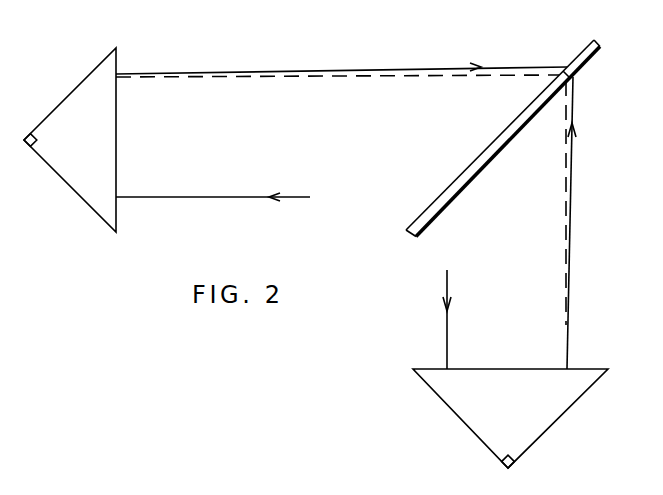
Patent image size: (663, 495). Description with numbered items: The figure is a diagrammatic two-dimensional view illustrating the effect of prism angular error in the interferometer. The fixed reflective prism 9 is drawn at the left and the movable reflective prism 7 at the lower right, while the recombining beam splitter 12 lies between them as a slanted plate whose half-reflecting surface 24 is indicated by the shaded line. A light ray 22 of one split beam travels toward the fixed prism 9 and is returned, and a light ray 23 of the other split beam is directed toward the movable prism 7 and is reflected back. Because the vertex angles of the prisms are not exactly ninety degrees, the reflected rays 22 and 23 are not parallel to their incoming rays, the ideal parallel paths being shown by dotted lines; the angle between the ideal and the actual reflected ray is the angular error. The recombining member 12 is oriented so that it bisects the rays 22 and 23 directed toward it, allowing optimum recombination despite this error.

The movable reflective prism 7 is at (578, 399).
The fixed reflective prism 9 is at (80, 84).
The recombining beam splitter 12 is at (577, 57).
The light ray of split beam 8 22 is at (320, 66).
The light ray of split beam 6 23 is at (459, 319).
The half-reflecting surface 24 is at (589, 60).